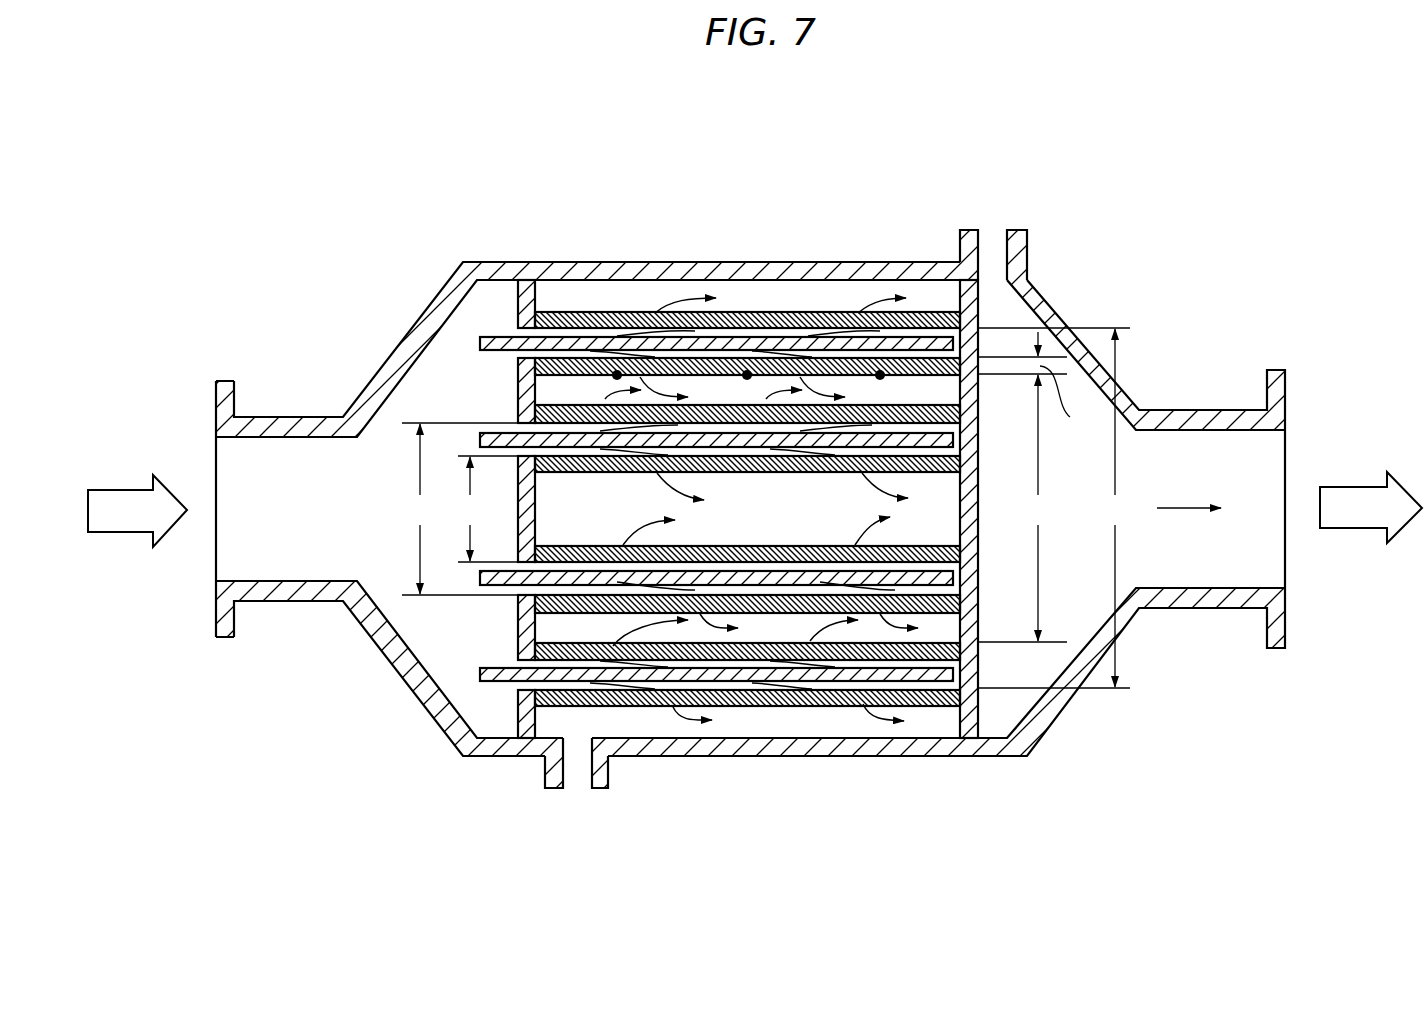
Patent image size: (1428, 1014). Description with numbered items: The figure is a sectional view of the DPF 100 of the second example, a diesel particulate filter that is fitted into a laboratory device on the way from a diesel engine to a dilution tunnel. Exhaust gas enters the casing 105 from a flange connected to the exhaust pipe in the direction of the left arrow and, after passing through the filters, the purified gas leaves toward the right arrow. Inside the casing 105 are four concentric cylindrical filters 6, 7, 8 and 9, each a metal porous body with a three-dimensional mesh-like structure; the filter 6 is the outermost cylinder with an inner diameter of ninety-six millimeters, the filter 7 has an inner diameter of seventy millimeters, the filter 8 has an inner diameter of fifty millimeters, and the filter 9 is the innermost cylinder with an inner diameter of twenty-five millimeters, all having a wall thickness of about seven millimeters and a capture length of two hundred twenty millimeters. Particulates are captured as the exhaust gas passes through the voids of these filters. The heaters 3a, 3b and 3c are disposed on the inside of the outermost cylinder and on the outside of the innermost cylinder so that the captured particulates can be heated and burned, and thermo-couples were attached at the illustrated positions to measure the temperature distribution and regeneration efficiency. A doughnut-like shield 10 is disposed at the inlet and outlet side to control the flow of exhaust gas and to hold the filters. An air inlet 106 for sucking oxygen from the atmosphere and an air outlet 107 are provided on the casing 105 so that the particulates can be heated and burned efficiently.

The heater 3a is at (480, 580).
The heater 3b is at (480, 677).
The heater 3c is at (637, 604).
The filter 6 is at (587, 313).
The filter 7 is at (550, 367).
The filter 8 is at (745, 613).
The filter 9 is at (778, 556).
The doughnut-like shield 10 is at (973, 676).
The DPF 100 is at (834, 256).
The casing 105 is at (678, 271).
The air inlet 106 is at (568, 784).
The air outlet 107 is at (992, 229).